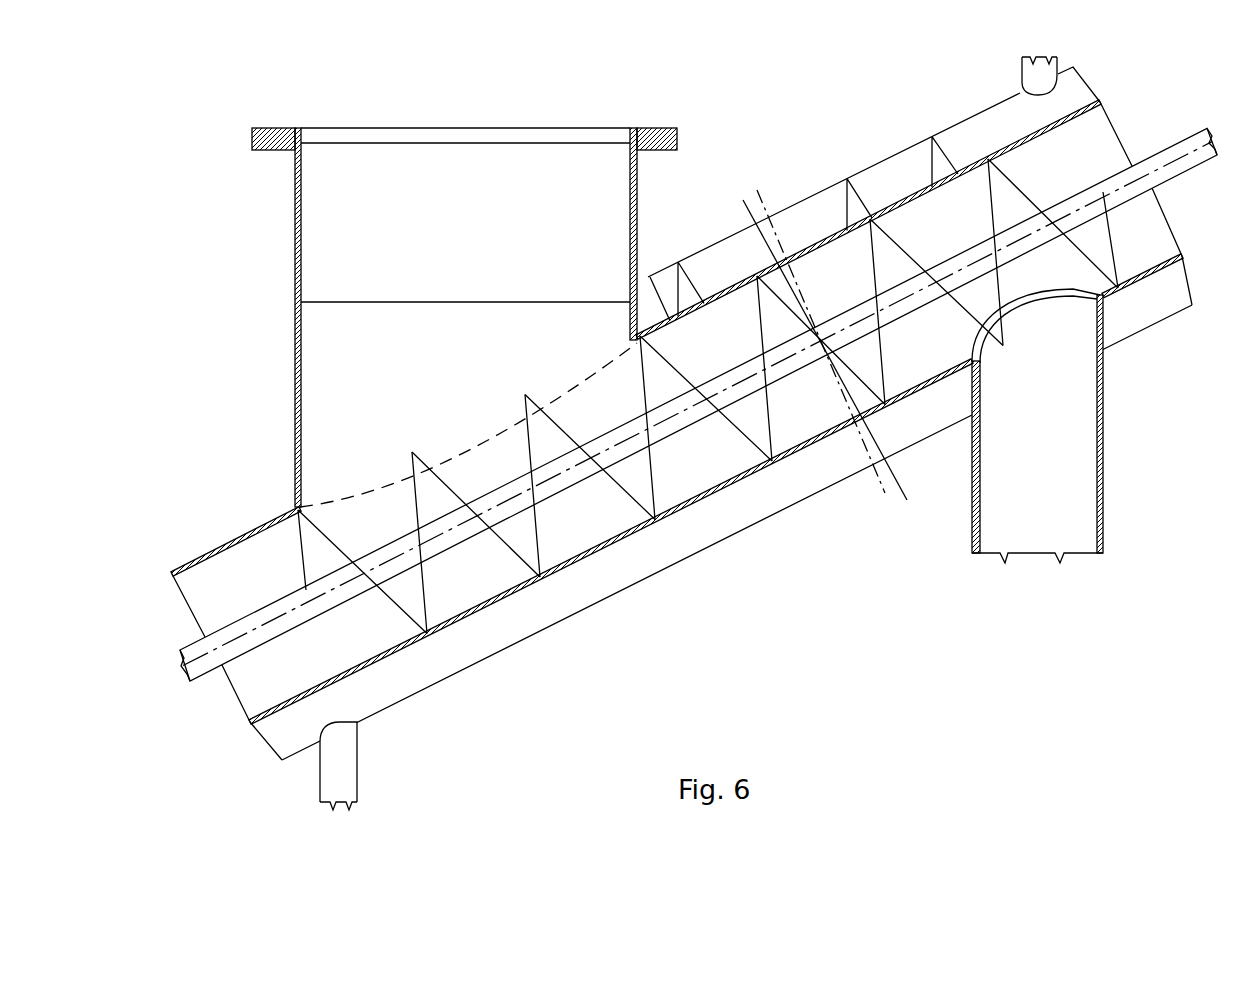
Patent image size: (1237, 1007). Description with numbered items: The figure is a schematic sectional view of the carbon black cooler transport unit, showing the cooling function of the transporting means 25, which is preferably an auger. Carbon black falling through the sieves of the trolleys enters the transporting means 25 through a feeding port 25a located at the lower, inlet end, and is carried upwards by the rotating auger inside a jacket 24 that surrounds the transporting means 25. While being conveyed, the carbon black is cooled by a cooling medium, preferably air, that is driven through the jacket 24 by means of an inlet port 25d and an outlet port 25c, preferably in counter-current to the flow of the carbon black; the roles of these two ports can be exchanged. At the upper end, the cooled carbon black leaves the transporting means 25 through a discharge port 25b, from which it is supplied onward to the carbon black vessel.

The jacket 24 is at (580, 582).
The transporting means 25 is at (653, 457).
The feeding port 25a is at (637, 217).
The discharge port 25b is at (1103, 448).
The outlet port 25c is at (357, 748).
The inlet port 25d is at (1057, 68).